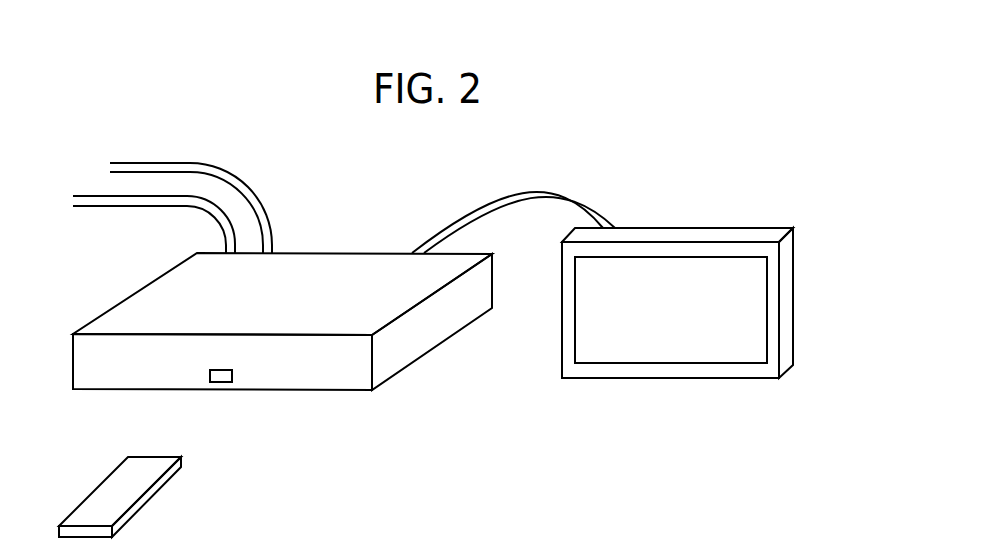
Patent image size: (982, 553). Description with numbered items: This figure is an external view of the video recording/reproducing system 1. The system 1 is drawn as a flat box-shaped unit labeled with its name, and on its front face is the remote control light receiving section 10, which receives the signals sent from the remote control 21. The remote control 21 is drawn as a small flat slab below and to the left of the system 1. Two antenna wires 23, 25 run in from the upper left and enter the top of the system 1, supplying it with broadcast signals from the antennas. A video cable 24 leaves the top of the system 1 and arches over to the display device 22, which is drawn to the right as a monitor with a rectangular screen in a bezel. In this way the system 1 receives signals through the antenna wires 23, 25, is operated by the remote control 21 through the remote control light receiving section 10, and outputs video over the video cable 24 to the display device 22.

The video recording/reproducing system 1 is at (314, 256).
The remote control light receiving section 10 is at (222, 382).
The remote control 21 is at (147, 500).
The display device 22 is at (684, 234).
The antenna wire 23 is at (243, 187).
The video cable 24 is at (553, 193).
The antenna wire 25 is at (132, 207).